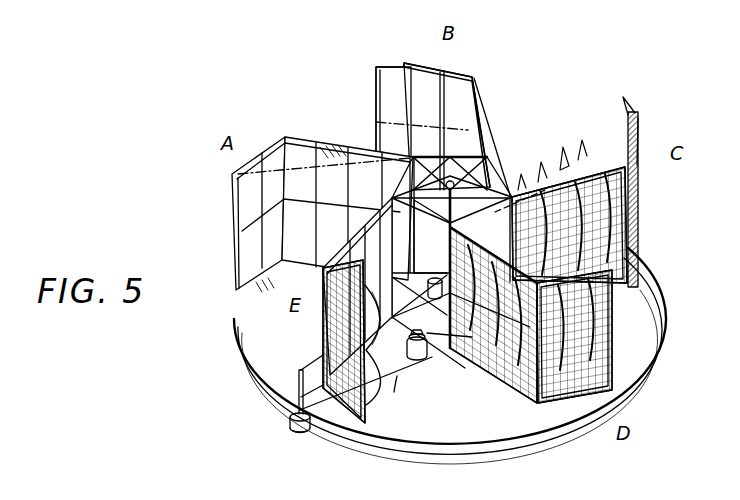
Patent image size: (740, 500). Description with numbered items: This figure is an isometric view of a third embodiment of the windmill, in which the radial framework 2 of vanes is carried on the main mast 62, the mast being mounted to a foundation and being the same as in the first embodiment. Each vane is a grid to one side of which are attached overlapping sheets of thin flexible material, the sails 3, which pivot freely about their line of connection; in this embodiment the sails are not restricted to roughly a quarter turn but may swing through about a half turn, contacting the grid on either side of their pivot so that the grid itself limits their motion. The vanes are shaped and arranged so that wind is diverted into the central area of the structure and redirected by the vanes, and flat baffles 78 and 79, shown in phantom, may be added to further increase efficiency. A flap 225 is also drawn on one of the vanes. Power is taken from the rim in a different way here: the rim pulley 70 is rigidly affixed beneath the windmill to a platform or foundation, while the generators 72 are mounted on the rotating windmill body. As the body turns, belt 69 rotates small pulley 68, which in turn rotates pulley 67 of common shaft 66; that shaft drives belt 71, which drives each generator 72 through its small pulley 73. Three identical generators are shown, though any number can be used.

The radial framework 2 is at (480, 92).
The sails 3 is at (596, 170).
The valve flap 225 is at (563, 182).
The main mast 62 is at (447, 232).
The common shaft 66 is at (300, 388).
The pulley 67 is at (290, 425).
The small pulley 68 is at (295, 431).
The belt 69 is at (316, 433).
The rim pulley 70 is at (449, 440).
The belt 71 is at (396, 380).
The generator 72 is at (419, 356).
The small pulley 73 is at (411, 329).
The flat baffle 78 is at (328, 150).
The flat baffle 79 is at (258, 288).